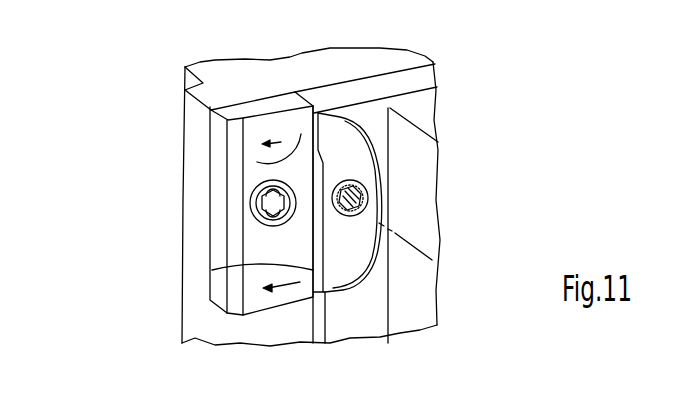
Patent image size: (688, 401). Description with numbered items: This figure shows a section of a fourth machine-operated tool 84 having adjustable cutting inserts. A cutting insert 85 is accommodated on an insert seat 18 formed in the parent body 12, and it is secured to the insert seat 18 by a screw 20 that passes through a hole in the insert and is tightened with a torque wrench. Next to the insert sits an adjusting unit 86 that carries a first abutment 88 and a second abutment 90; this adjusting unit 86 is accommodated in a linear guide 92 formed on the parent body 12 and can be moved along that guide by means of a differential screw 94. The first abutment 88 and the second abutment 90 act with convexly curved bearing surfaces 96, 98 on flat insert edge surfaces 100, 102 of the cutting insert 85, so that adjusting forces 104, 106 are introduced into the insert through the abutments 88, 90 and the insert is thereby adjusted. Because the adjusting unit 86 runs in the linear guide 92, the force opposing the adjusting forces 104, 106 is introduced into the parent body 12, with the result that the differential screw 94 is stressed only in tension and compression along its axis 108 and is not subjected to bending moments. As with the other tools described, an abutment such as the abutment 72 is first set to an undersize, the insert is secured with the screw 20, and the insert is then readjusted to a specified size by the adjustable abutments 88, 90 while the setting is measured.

The parent body 12 is at (372, 121).
The insert seat 18 is at (266, 95).
The screw 20 is at (262, 203).
The abutment 72 is at (275, 0).
The machine-operated tool 84 is at (135, 100).
The cutting insert 85 is at (295, 92).
The adjusting unit 86 is at (386, 210).
The first abutment 88 is at (437, 90).
The second abutment 90 is at (350, 271).
The linear guide 92 is at (383, 258).
The differential screw 94 is at (363, 182).
The convexly curved bearing surface 96 is at (433, 70).
The convexly curved bearing surface 98 is at (312, 280).
The flat insert edge surface 100 is at (323, 162).
The flat insert edge surface 102 is at (212, 270).
The adjusting force 104 is at (250, 162).
The adjusting force 106 is at (288, 292).
The axis 108 is at (419, 251).